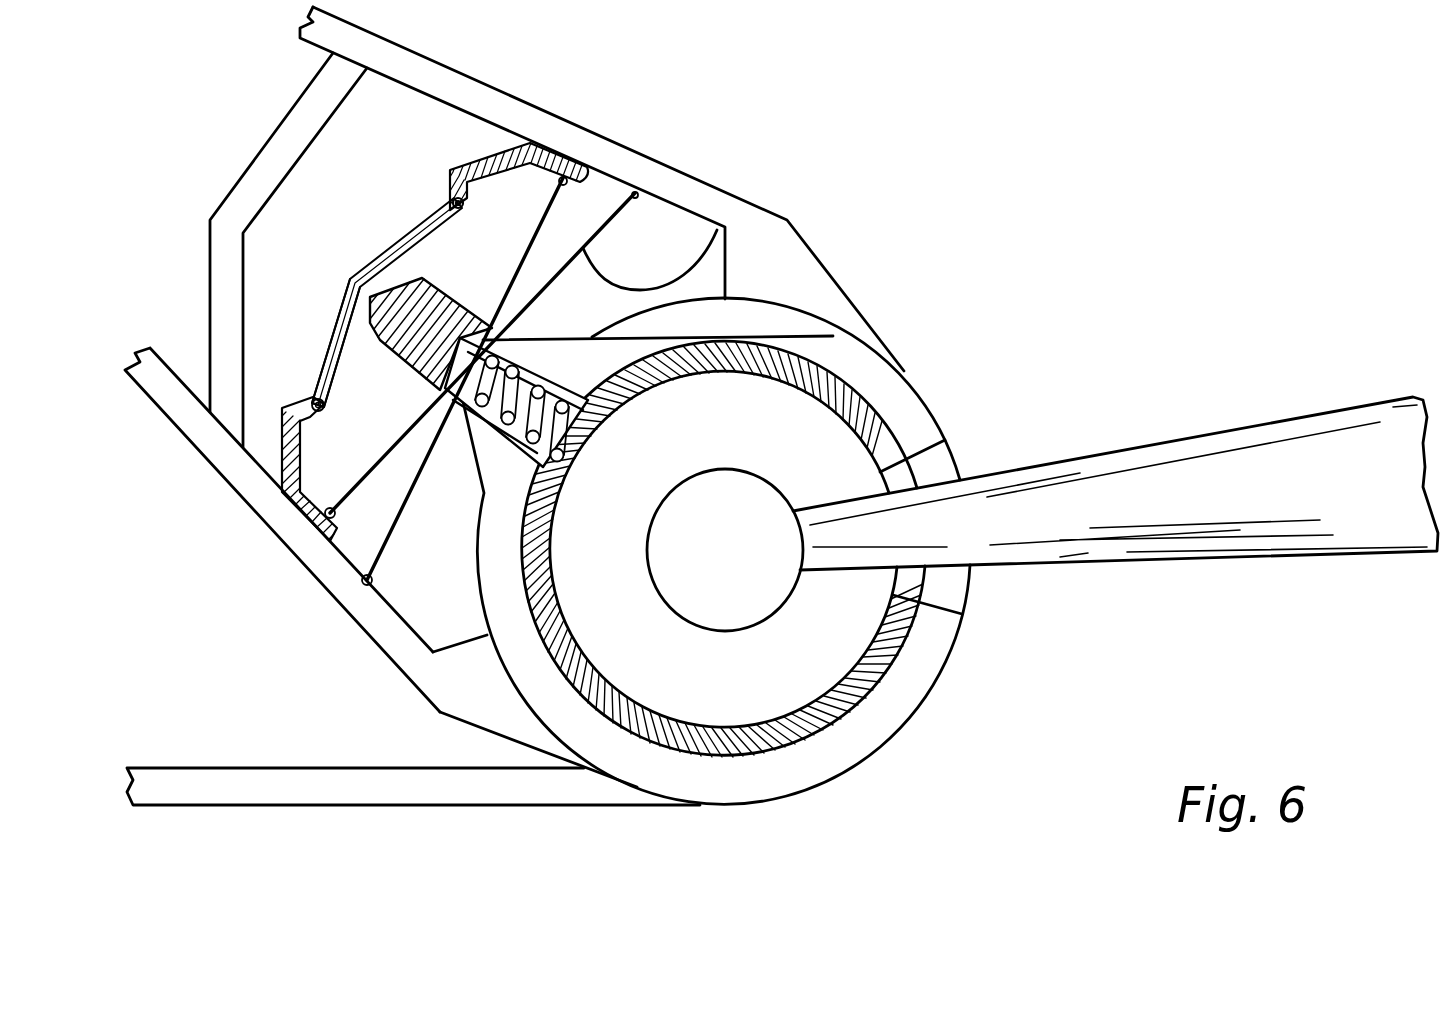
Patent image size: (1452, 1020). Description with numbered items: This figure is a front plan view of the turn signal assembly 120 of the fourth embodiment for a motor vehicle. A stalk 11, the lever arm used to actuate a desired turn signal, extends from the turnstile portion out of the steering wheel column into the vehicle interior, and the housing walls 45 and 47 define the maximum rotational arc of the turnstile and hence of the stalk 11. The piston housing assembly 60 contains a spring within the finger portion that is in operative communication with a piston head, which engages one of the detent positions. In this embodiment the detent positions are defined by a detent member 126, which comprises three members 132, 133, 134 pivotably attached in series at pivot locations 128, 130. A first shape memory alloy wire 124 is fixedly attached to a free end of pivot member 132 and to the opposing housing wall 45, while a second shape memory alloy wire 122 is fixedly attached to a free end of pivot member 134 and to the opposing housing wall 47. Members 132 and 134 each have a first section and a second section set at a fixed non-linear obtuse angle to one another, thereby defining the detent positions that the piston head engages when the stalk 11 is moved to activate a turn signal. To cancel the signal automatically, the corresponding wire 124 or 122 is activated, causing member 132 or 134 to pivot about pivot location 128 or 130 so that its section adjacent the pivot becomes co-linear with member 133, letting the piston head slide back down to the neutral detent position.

The stalk 11 is at (1277, 413).
The housing wall 45 is at (463, 67).
The housing wall 47 is at (255, 517).
The piston housing assembly 60 is at (400, 393).
The turn signal assembly 120 is at (922, 218).
The second shape memory alloy wire 122 is at (405, 507).
The first shape memory alloy wire 124 is at (717, 230).
The detent member 126 is at (402, 237).
The pivot location 128 is at (453, 202).
The pivot location 130 is at (312, 400).
The pivot member 132 is at (300, 543).
The member 133 is at (343, 300).
The pivot member 134 is at (567, 157).